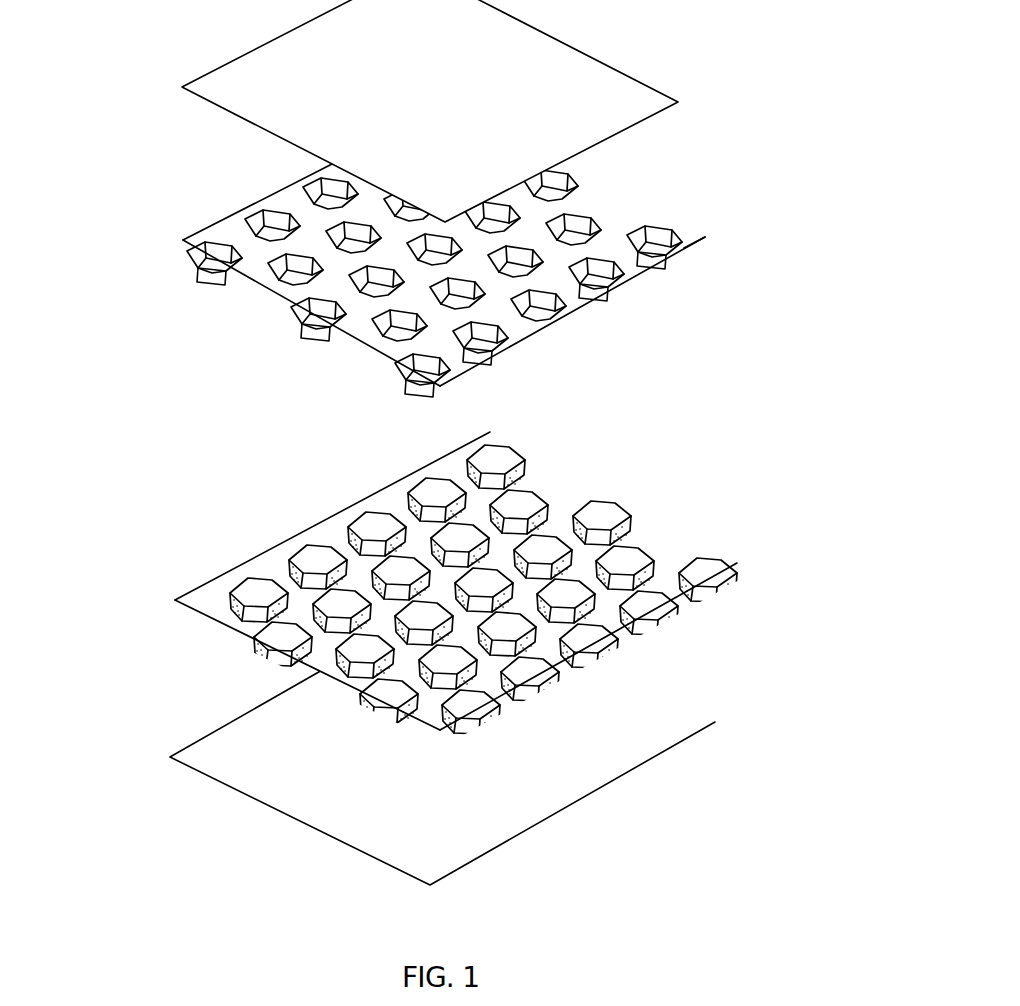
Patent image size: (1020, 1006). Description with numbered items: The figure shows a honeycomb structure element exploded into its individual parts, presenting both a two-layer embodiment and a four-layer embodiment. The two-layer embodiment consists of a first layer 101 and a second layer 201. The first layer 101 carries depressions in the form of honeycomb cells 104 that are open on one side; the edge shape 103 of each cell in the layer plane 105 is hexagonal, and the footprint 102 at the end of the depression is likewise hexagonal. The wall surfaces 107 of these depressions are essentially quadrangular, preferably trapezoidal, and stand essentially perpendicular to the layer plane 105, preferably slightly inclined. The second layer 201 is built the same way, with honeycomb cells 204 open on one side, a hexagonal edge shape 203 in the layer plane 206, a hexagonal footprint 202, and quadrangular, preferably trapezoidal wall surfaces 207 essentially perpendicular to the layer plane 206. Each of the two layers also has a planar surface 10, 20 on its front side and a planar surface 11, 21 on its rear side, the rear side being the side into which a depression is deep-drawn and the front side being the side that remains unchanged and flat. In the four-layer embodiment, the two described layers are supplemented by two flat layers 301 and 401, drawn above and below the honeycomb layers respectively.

The planar surface on the front side 10 is at (618, 228).
The planar surface on the rear side 11 is at (357, 348).
The first layer 101 is at (283, 183).
The footprint 102 is at (622, 302).
The edge shape 103 is at (500, 333).
The honeycomb cell 104 is at (300, 272).
The layer plane 105 is at (231, 233).
The wall surface 107 is at (685, 258).
The flat layer 301 is at (650, 115).
The planar surface on the front side 20 is at (339, 692).
The planar surface on the rear side 21 is at (660, 540).
The second layer 201 is at (305, 528).
The footprint 202 is at (432, 488).
The edge shape 203 is at (530, 647).
The honeycomb cell 204 is at (284, 642).
The layer plane 206 is at (217, 597).
The wall surface 207 is at (630, 617).
The flat layer 401 is at (558, 812).